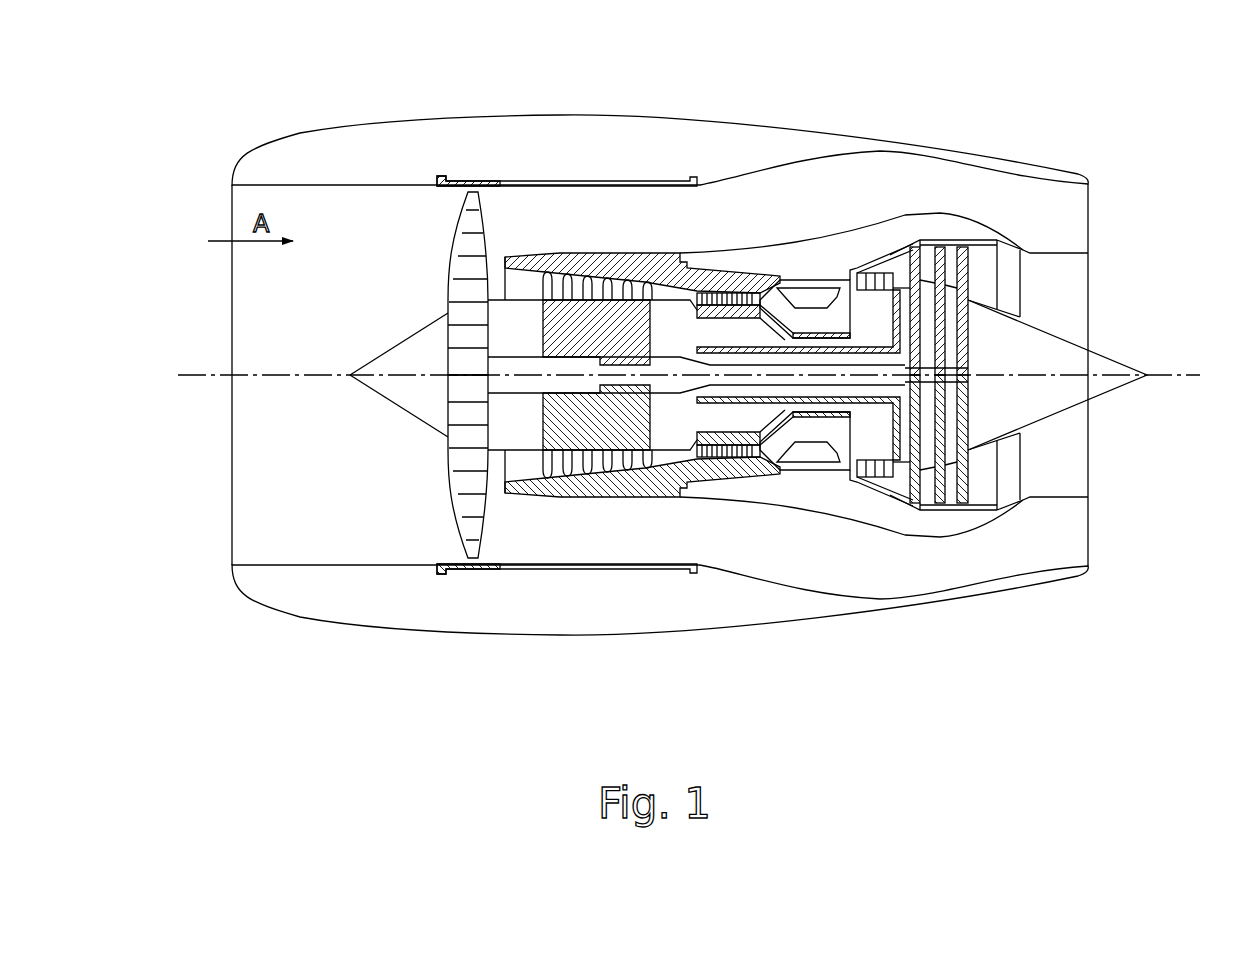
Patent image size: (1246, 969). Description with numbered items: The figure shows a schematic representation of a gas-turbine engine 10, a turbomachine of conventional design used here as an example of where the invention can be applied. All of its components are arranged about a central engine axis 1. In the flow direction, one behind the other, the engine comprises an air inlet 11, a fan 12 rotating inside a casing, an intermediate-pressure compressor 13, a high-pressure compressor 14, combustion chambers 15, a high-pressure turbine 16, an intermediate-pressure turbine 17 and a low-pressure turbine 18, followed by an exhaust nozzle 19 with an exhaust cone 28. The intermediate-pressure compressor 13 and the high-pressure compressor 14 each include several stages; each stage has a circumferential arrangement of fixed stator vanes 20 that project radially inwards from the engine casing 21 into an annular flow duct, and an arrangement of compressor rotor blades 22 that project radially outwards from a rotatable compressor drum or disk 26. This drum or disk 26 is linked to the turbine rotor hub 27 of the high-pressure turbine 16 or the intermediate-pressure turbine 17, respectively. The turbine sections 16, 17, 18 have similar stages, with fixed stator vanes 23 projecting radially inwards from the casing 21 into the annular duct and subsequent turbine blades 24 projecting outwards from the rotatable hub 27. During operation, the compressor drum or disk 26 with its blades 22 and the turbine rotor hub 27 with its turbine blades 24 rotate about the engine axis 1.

The engine axis 1 is at (305, 376).
The gas-turbine engine 10 is at (845, 184).
The air inlet 11 is at (393, 236).
The fan 12 is at (445, 170).
The intermediate-pressure compressor 13 is at (622, 318).
The high-pressure compressor 14 is at (745, 275).
The combustion chambers 15 is at (812, 285).
The high-pressure turbine 16 is at (912, 300).
The intermediate-pressure turbine 17 is at (932, 238).
The low-pressure turbine 18 is at (978, 238).
The exhaust nozzle 19 is at (1005, 298).
The stator vanes 20 is at (557, 470).
The engine casing 21 is at (557, 470).
The compressor rotor blades 22 is at (607, 490).
The stator vanes 23 is at (900, 485).
The turbine blades 24 is at (940, 490).
The compressor drum or disk 26 is at (645, 428).
The turbine rotor hub 27 is at (882, 488).
The exhaust cone 28 is at (1098, 360).